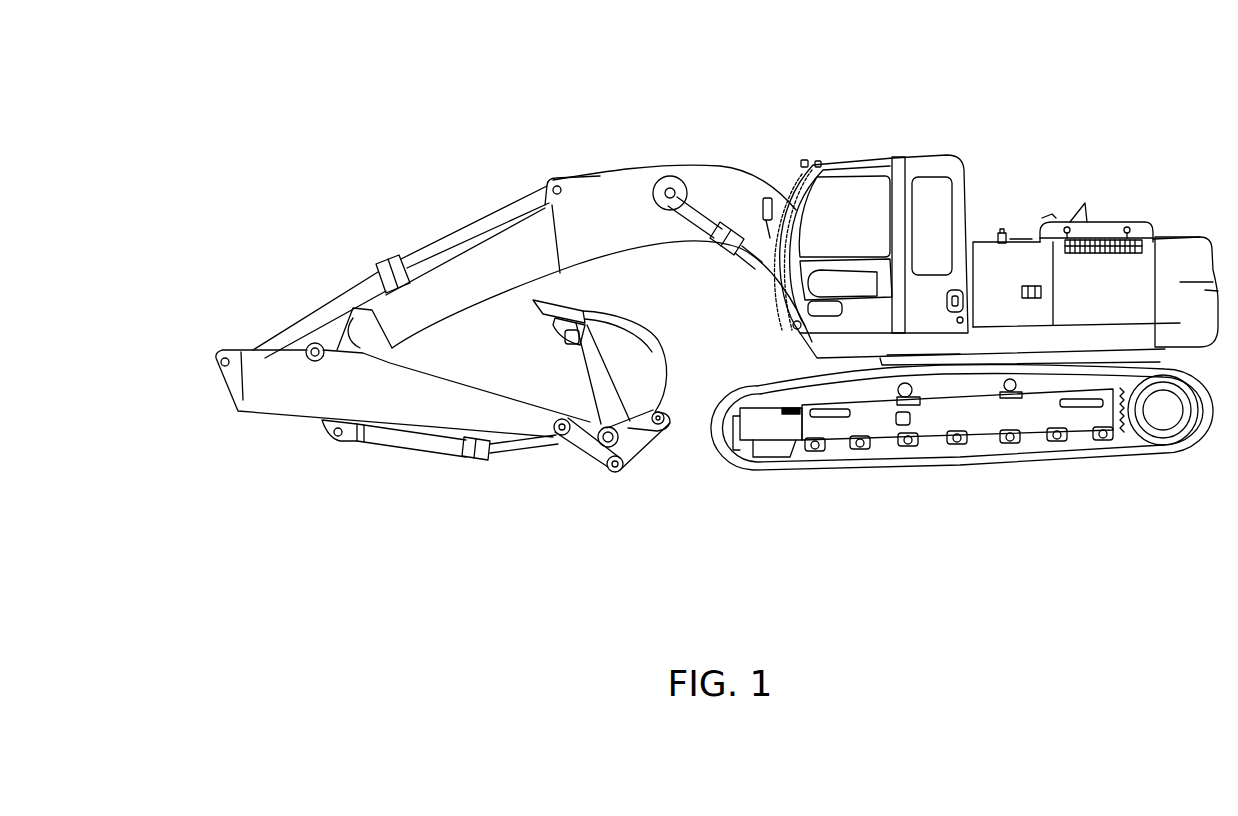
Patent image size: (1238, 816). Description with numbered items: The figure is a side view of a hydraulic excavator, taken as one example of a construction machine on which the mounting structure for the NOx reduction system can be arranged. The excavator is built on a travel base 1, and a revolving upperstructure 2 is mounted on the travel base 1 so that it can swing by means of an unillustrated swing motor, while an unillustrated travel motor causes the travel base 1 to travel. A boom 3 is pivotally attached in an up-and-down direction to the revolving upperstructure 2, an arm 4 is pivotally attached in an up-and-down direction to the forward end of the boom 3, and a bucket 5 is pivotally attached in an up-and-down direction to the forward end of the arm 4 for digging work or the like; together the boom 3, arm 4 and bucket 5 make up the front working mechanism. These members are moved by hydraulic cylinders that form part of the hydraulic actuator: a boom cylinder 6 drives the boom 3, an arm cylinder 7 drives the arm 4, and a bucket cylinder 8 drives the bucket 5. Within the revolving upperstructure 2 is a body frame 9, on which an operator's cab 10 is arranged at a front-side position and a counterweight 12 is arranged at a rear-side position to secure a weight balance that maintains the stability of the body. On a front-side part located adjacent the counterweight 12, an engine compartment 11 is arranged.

The travel base 1 is at (913, 465).
The revolving upperstructure 2 is at (978, 240).
The boom 3 is at (645, 168).
The arm 4 is at (323, 423).
The bucket 5 is at (667, 362).
The boom cylinder 6 is at (752, 250).
The arm cylinder 7 is at (430, 250).
The bucket cylinder 8 is at (430, 445).
The body frame 9 is at (1055, 343).
The operator's cab 10 is at (858, 157).
The engine compartment 11 is at (1105, 220).
The counterweight 12 is at (1178, 237).